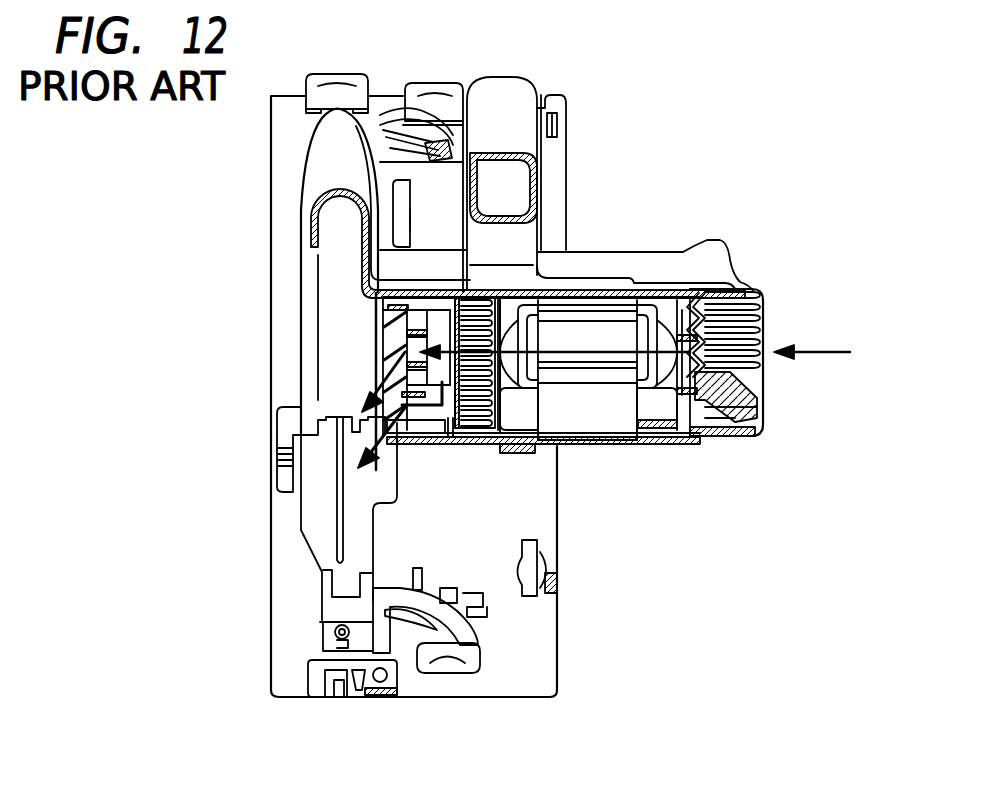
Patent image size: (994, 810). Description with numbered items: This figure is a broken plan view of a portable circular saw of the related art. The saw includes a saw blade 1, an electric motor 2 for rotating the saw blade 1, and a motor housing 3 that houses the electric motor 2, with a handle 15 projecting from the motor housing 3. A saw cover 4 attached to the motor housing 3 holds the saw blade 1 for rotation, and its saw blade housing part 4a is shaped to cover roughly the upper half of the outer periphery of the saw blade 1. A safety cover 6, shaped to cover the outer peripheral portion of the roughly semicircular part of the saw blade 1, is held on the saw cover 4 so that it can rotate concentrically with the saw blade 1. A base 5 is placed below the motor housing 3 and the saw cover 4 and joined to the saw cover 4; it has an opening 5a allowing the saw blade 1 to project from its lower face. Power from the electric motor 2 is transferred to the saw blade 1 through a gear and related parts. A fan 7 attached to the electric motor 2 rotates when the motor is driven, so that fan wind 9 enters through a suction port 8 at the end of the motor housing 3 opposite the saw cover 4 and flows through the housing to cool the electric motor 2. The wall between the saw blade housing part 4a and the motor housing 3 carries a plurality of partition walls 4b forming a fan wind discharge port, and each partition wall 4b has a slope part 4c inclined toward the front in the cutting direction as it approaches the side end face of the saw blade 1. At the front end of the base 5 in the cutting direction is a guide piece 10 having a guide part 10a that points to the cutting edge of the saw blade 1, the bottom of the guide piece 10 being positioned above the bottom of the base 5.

The saw blade 1 is at (335, 527).
The electric motor 2 is at (596, 413).
The motor housing 3 is at (677, 277).
The saw cover 4 is at (433, 267).
The saw blade housing part 4a is at (330, 152).
The partition walls 4b is at (437, 290).
The slope part 4c is at (385, 340).
The base 5 is at (528, 643).
The opening 5a is at (355, 531).
The safety cover 6 is at (342, 298).
The fan 7 is at (480, 388).
The suction port 8 is at (760, 375).
The fan wind 9 is at (382, 443).
The guide piece 10 is at (317, 673).
The guide part 10a is at (340, 697).
The handle 15 is at (507, 85).